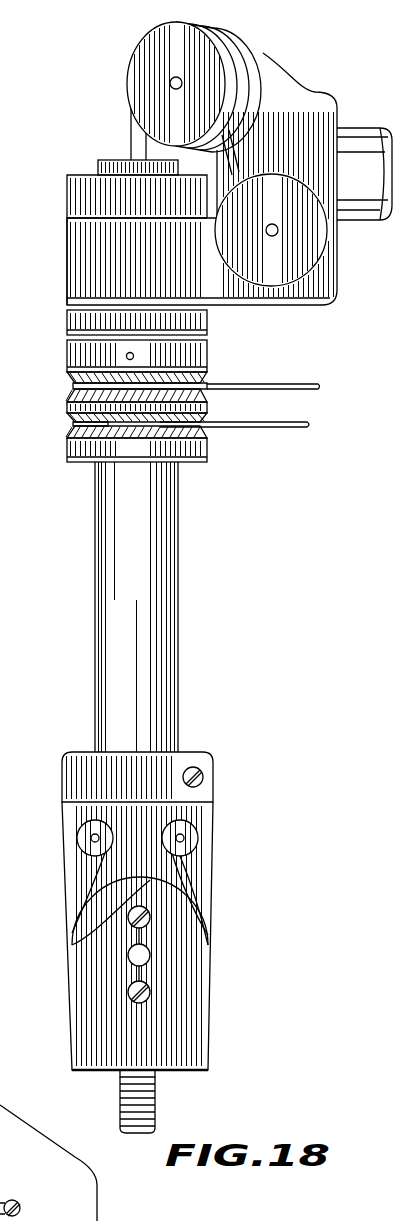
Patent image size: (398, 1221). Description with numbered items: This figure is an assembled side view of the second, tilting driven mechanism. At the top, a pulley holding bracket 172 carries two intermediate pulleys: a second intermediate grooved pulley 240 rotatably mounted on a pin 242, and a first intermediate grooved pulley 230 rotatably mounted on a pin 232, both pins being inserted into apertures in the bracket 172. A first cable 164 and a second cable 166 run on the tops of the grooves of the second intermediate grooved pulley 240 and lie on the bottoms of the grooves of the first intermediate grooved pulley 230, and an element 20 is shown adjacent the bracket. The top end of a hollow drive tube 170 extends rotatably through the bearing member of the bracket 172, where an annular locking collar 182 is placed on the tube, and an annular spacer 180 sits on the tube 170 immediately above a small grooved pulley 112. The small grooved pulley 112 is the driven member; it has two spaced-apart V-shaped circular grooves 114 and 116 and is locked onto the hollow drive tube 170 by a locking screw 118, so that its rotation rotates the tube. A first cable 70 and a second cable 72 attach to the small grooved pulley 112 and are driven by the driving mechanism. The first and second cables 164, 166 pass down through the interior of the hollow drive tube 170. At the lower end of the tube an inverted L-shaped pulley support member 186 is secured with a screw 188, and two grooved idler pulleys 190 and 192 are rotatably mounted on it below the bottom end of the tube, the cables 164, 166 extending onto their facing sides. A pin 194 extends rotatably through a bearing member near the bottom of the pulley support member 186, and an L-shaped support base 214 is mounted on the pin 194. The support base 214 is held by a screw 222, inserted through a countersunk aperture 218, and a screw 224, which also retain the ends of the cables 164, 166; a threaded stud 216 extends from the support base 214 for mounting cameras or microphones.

The tube 20 is at (352, 130).
The first cable 70 is at (310, 385).
The second cable 72 is at (305, 424).
The small grooved pulley 112 is at (207, 350).
The V-shaped circular groove 114 is at (74, 388).
The V-shaped circular groove 116 is at (74, 426).
The locking screw 118 is at (127, 356).
The first cable 164 is at (148, 160).
The second cable 166 is at (145, 152).
The hollow drive tube 170 is at (178, 660).
The pulley holding bracket 172 is at (305, 105).
The annular spacer 180 is at (207, 318).
The annular locking collar 182 is at (100, 166).
The pulley support member 186 is at (213, 815).
The screw 188 is at (203, 780).
The grooved idler pulley 190 is at (85, 842).
The grooved idler pulley 192 is at (198, 842).
The pin 194 is at (128, 955).
The L-shaped support base 214 is at (195, 968).
The threaded stud 216 is at (156, 1098).
The countersunk aperture 218 is at (48, 1163).
The screw 222 is at (150, 917).
The screw 224 is at (150, 994).
The first intermediate grooved pulley 230 is at (322, 243).
The pin 232 is at (276, 224).
The second intermediate grooved pulley 240 is at (240, 48).
The pin 242 is at (171, 82).